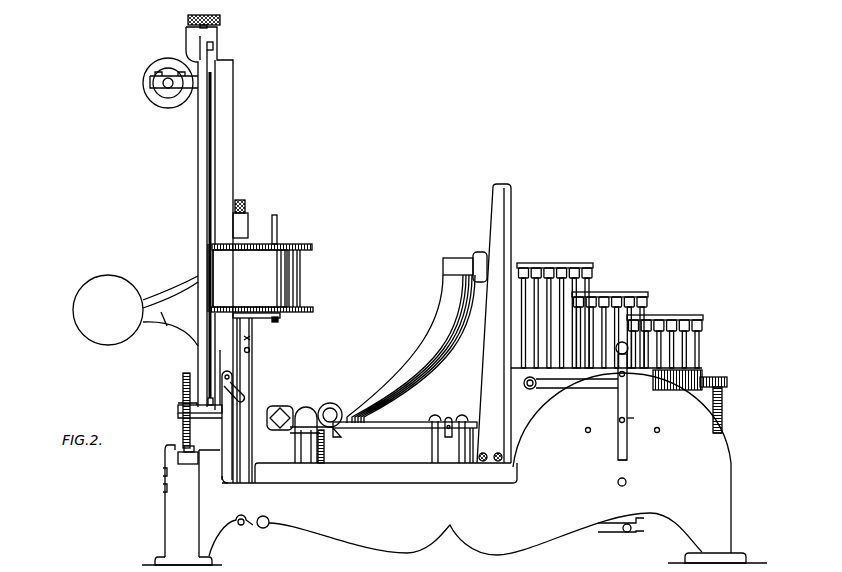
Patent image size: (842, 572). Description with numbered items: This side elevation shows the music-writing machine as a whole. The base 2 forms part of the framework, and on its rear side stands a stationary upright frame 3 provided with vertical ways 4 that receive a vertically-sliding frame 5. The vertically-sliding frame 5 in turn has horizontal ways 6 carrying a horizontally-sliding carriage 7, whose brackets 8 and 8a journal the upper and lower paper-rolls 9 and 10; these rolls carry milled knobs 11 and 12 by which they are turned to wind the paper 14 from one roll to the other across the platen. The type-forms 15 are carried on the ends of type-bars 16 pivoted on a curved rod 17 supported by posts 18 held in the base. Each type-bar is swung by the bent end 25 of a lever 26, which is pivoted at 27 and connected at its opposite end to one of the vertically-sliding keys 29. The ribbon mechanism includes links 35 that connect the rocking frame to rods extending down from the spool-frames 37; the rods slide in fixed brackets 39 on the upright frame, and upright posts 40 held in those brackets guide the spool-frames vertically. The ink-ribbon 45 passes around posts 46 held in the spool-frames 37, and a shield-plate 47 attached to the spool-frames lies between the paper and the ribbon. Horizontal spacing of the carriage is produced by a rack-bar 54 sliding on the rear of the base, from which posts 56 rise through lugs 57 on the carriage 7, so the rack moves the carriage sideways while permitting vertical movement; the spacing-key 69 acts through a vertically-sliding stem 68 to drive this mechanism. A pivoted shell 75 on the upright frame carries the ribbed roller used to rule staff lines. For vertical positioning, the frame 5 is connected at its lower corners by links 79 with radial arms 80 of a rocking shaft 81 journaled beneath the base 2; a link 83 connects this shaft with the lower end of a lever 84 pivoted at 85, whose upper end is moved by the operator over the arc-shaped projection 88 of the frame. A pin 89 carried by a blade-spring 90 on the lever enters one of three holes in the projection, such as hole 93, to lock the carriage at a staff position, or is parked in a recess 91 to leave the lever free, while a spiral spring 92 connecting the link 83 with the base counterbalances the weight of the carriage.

The base 2 is at (732, 507).
The stationary upright frame 3 is at (222, 428).
The vertical ways 4 is at (166, 412).
The vertically-sliding frame 5 is at (223, 353).
The horizontal ways 6 is at (213, 46).
The horizontally-sliding carriage 7 is at (200, 52).
The bracket 8 is at (182, 92).
The bracket 8a is at (168, 332).
The upper paper-roll 9 is at (150, 88).
The lower paper-roll 10 is at (142, 296).
The milled knob 11 is at (87, 320).
The milled knob 12 is at (152, 72).
The paper 14 is at (212, 172).
The type-forms 15 is at (458, 262).
The type-bars 16 is at (420, 353).
The curved rod 17 is at (328, 405).
The posts 18 is at (300, 455).
The bent end of the lever 25 is at (453, 440).
The lever 26 is at (403, 424).
The pivot 27 is at (449, 416).
The vertically-sliding keys 29 is at (594, 266).
The links 35 is at (253, 372).
The spool-frames 37 is at (280, 318).
The fixed brackets 39 is at (300, 304).
The upright posts 40 is at (278, 216).
The ink-ribbon 45 is at (235, 273).
The posts 46 is at (213, 248).
The shield-plate 47 is at (207, 296).
The rack-bar 54 is at (188, 464).
The posts 56 is at (183, 378).
The lugs 57 is at (180, 409).
The vertically-sliding stem 68 is at (722, 420).
The spacing-key 69 is at (727, 381).
The shell or case 75 is at (247, 220).
The links 79 is at (242, 405).
The radial arms 80 is at (242, 525).
The rocking shaft 81 is at (268, 520).
The link 83 is at (601, 543).
The lever 84 is at (628, 350).
The pivot 85 is at (626, 482).
The arc-shaped projection 88 is at (722, 405).
The pin 89 is at (618, 420).
The blade-spring 90 is at (626, 438).
The recess 91 is at (628, 420).
The spiral spring 92 is at (588, 433).
The hole 93 is at (660, 432).